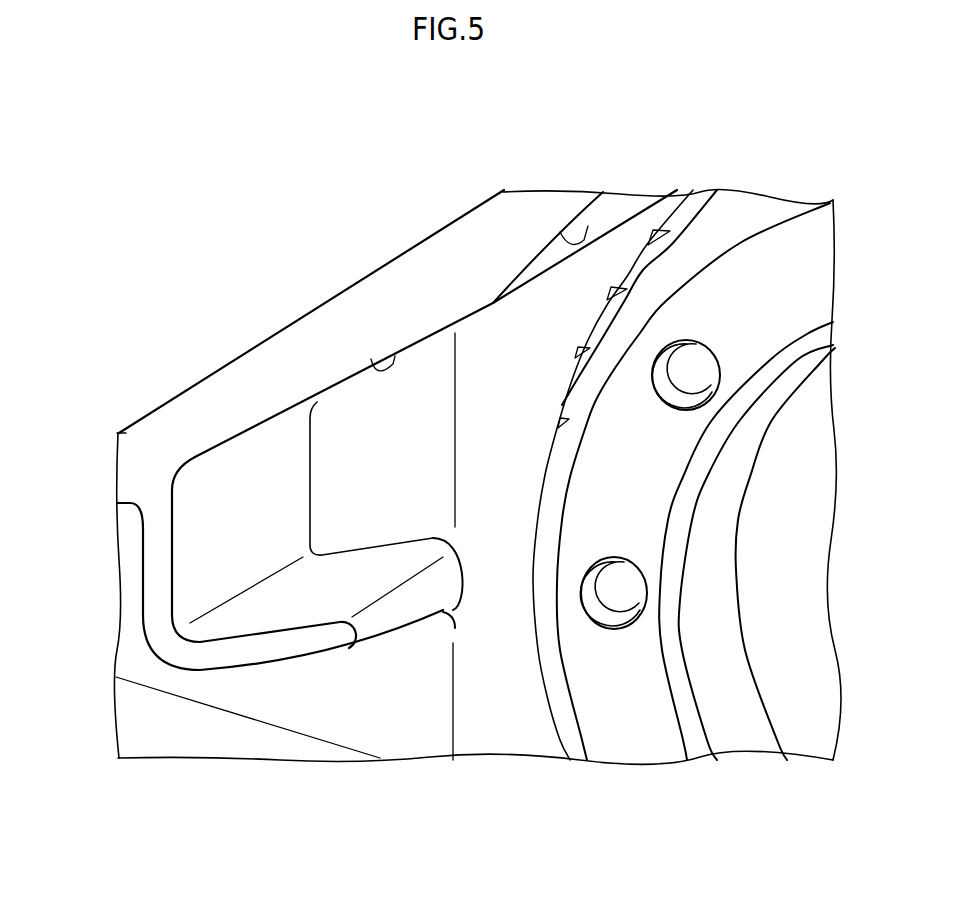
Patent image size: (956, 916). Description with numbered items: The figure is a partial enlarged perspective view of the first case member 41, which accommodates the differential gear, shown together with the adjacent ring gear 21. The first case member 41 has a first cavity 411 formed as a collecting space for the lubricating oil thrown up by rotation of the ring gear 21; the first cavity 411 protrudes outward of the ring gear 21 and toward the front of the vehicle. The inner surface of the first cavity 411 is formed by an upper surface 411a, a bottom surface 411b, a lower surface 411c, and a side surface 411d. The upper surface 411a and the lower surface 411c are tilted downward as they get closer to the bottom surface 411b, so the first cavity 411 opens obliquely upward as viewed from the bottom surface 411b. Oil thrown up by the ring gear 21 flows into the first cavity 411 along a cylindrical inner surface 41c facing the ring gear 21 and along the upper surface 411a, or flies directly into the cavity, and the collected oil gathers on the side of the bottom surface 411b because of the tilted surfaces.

The ring gear 21 is at (768, 210).
The first case member 41 is at (373, 285).
The cylindrical inner surface 41c is at (560, 232).
The first cavity 411 is at (208, 562).
The upper surface 411a is at (370, 360).
The bottom surface 411b is at (228, 490).
The lower surface 411c is at (306, 604).
The side surface 411d is at (363, 418).